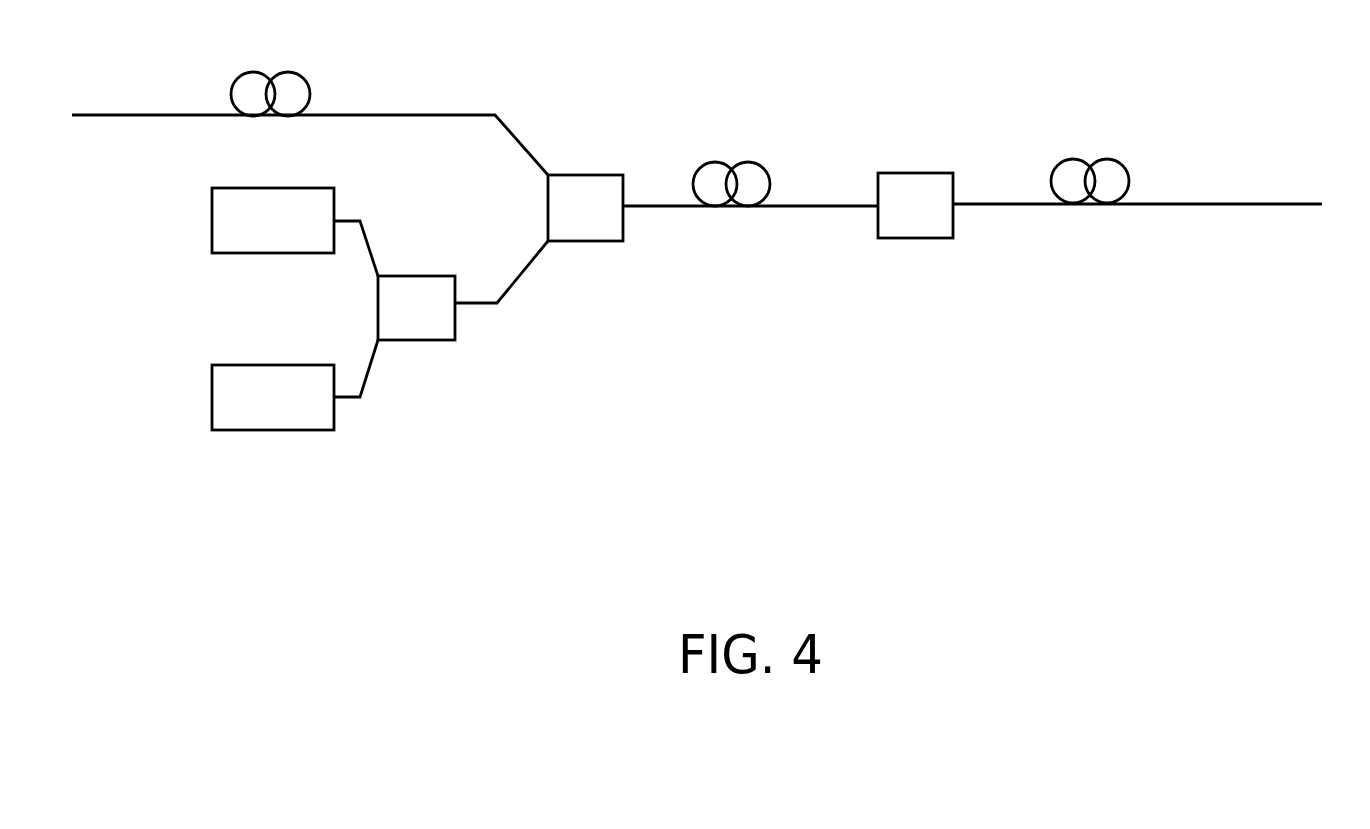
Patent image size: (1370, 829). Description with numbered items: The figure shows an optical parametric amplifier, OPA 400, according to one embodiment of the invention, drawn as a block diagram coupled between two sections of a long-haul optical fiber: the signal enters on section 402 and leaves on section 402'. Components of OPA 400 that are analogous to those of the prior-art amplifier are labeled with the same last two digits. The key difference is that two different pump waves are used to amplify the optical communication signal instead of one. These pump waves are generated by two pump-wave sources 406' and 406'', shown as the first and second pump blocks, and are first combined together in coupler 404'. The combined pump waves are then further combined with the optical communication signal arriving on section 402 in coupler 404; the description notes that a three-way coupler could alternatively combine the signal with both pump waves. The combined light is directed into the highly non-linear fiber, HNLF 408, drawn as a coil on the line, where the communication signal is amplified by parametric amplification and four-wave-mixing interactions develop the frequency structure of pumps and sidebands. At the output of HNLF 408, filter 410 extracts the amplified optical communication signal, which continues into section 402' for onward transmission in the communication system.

The OPA 400 is at (745, 318).
The section of long-haul optical fiber 402 is at (303, 105).
The section of long-haul optical fiber 402' is at (1159, 178).
The coupler 404 is at (596, 171).
The coupler 404' is at (463, 323).
The pump-wave source 406' is at (243, 232).
The pump-wave source 406'' is at (235, 388).
The highly non-linear fiber (HNLF) 408 is at (800, 206).
The filter 410 is at (913, 173).